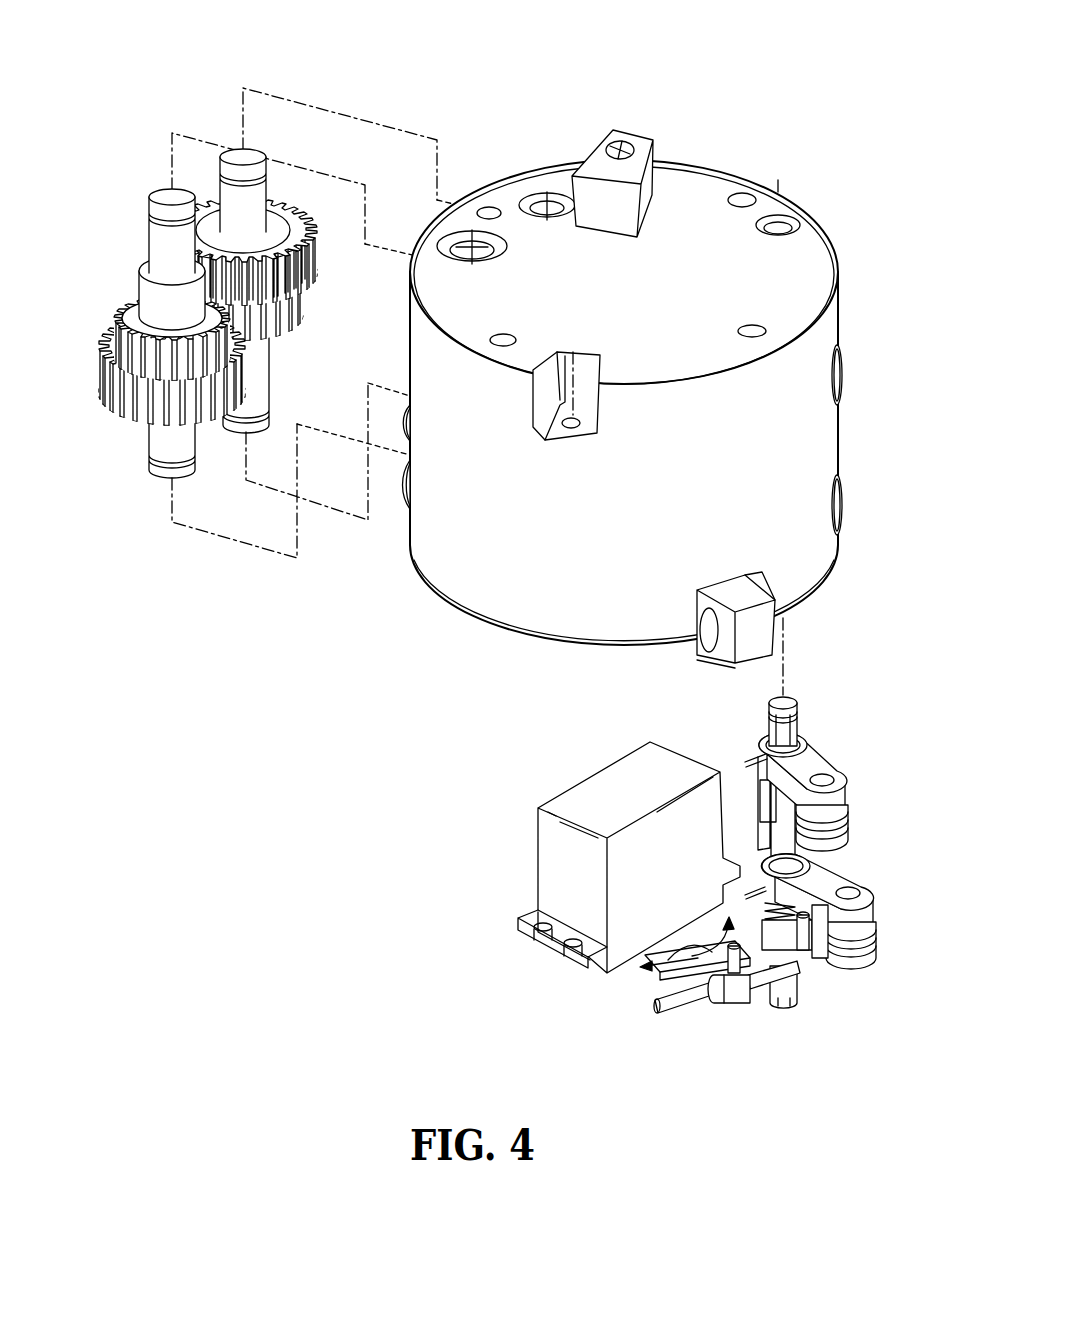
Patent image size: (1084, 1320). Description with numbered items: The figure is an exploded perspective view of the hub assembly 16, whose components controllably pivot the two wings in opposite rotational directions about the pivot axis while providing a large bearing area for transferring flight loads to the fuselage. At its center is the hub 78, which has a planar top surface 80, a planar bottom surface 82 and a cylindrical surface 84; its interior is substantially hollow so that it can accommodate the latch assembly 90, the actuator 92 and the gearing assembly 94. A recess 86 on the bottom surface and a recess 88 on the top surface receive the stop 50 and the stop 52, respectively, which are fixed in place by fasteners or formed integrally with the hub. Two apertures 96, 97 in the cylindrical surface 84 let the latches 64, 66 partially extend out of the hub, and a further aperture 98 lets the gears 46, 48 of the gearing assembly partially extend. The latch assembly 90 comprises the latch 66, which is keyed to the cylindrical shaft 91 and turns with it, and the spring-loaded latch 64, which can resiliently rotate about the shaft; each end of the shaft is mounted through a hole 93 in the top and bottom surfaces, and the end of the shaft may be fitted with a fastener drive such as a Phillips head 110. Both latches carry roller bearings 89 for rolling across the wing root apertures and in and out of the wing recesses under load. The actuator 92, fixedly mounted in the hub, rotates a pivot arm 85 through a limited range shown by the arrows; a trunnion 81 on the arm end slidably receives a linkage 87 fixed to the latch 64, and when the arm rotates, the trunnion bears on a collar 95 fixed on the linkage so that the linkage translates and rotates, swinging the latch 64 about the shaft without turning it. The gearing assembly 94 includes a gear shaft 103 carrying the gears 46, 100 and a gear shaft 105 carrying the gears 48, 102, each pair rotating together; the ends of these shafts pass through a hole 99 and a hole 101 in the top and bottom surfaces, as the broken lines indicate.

The hub assembly 16 is at (801, 92).
The gear 46 is at (148, 410).
The gear 48 is at (290, 241).
The stop 50 is at (705, 655).
The stop 52 is at (600, 165).
The latch 64 is at (820, 881).
The latch 66 is at (798, 758).
The hub 78 is at (515, 543).
The planar top surface 80 is at (703, 195).
The trunnion 81 is at (730, 1007).
The planar bottom surface 82 is at (557, 643).
The cylindrical surface 84 is at (488, 600).
The pivot arm 85 is at (683, 965).
The recess 86 is at (701, 602).
The linkage 87 is at (762, 980).
The recess 88 is at (560, 434).
The roller bearing 89 is at (825, 834).
The latch assembly 90 is at (816, 1026).
The cylindrical shaft 91 is at (793, 698).
The actuator 92 is at (558, 863).
The hole 93 is at (790, 235).
The gearing assembly 94 is at (159, 338).
The collar 95 is at (712, 1002).
The aperture 96 is at (838, 490).
The aperture 97 is at (836, 347).
The aperture 98 is at (413, 425).
The hole 99 is at (447, 243).
The gear 100 is at (132, 356).
The hole 101 is at (525, 190).
The gear 102 is at (283, 313).
The gear shaft 103 is at (165, 240).
The gear shaft 105 is at (252, 242).
The Phillips head 110 is at (782, 997).